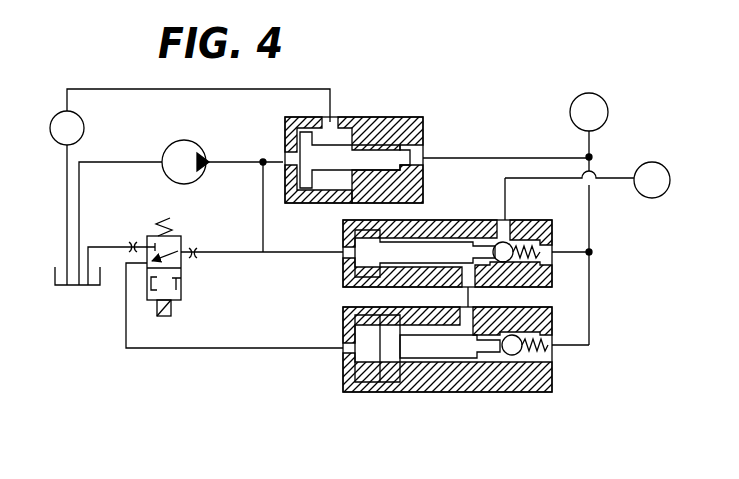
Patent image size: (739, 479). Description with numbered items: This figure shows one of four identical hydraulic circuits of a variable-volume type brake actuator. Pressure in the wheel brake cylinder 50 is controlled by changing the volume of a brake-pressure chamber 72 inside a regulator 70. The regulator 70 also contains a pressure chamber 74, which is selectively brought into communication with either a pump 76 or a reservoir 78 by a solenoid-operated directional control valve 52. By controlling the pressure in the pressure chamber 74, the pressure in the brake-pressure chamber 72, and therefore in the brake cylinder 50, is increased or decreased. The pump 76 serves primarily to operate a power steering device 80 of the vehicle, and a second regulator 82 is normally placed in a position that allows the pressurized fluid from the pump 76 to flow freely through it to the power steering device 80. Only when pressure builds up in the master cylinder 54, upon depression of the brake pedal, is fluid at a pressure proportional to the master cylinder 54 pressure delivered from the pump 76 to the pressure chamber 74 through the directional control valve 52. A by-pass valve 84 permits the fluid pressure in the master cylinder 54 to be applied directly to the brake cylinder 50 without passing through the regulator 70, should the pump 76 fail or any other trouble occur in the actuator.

The wheel brake cylinder 50 is at (652, 170).
The solenoid-operated directional control valve 52 is at (190, 273).
The master cylinder 54 is at (577, 110).
The regulator 70 is at (443, 348).
The brake-pressure chamber 72 is at (480, 360).
The pressure chamber 74 is at (365, 362).
The pump 76 is at (172, 150).
The reservoir 78 is at (80, 287).
The power steering device 80 is at (57, 123).
The regulator 82 is at (406, 110).
The by-pass valve 84 is at (334, 280).